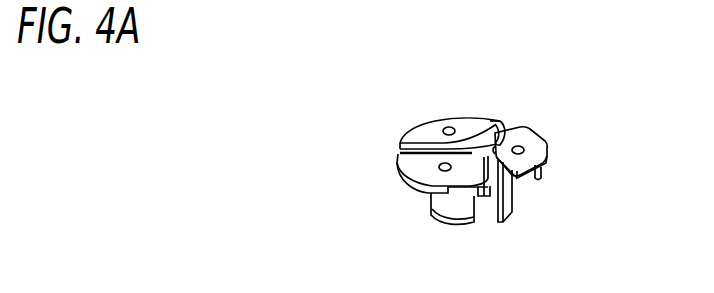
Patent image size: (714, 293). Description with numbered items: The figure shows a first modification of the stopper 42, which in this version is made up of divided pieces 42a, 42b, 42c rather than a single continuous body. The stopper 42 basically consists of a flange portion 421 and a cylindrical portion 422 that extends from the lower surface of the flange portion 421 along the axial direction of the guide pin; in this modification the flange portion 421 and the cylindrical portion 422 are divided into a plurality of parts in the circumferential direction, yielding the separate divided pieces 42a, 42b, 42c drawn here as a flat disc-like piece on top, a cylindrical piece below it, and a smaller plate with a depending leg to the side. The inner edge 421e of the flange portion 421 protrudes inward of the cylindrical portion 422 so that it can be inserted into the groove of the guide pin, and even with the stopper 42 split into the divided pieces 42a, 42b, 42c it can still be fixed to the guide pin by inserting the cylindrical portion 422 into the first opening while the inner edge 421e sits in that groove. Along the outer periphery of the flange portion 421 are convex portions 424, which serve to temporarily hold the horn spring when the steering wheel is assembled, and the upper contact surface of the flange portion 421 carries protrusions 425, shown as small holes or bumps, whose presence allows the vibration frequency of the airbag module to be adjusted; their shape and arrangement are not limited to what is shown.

The stopper 42 is at (503, 171).
The divided piece 42a is at (554, 131).
The divided piece 42b is at (432, 220).
The divided piece 42c is at (468, 112).
The flange portion 421 is at (400, 146).
The inner edge 421e is at (497, 121).
The cylindrical portion 422 is at (432, 209).
The convex portion 424 is at (415, 181).
The protrusion 425 is at (432, 125).